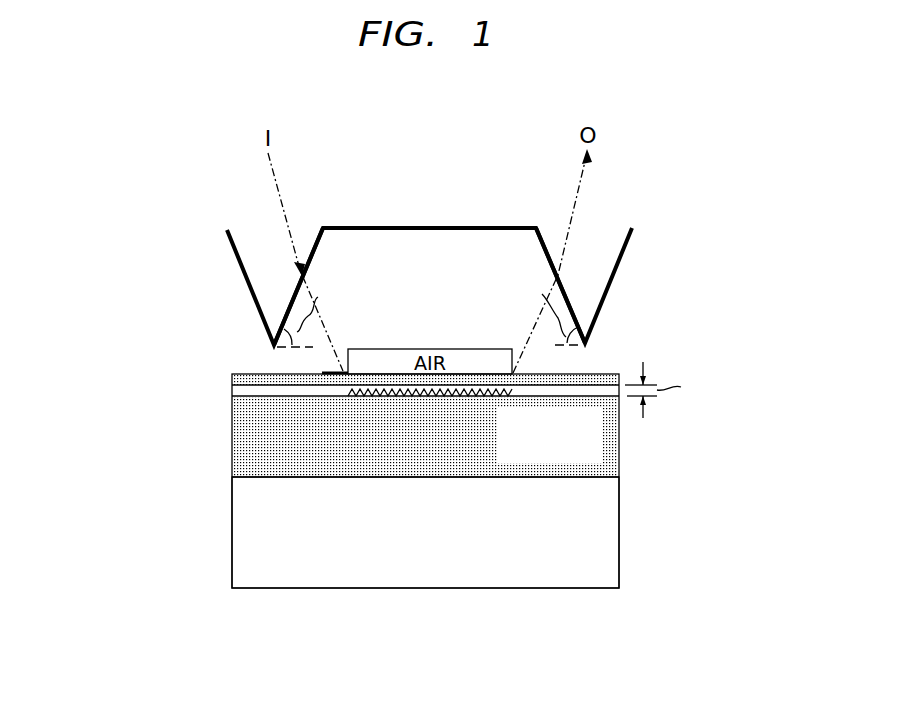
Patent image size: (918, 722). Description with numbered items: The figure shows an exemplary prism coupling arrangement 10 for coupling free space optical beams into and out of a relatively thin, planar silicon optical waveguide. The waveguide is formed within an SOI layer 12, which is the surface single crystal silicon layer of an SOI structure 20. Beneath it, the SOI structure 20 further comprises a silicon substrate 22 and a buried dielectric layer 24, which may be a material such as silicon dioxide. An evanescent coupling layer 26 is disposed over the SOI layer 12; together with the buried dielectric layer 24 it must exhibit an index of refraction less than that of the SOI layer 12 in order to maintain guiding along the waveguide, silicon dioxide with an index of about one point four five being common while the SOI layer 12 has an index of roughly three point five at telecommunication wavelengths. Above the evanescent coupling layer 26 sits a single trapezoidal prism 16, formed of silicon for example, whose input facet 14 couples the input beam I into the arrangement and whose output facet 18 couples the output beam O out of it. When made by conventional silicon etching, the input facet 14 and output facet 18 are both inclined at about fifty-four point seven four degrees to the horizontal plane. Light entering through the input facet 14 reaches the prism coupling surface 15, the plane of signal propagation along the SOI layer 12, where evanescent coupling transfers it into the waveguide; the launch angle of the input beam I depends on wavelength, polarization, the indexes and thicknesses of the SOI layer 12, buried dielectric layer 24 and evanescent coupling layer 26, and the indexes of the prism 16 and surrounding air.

The prism coupling arrangement 10 is at (476, 150).
The SOI layer 12 is at (622, 388).
The input facet 14 is at (293, 330).
The prism coupling surface 15 is at (333, 373).
The trapezoidal prism 16 is at (353, 228).
The output facet 18 is at (575, 316).
The SOI structure 20 is at (712, 395).
The silicon substrate 22 is at (242, 534).
The buried dielectric layer 24 is at (242, 432).
The evanescent coupling layer 26 is at (240, 380).